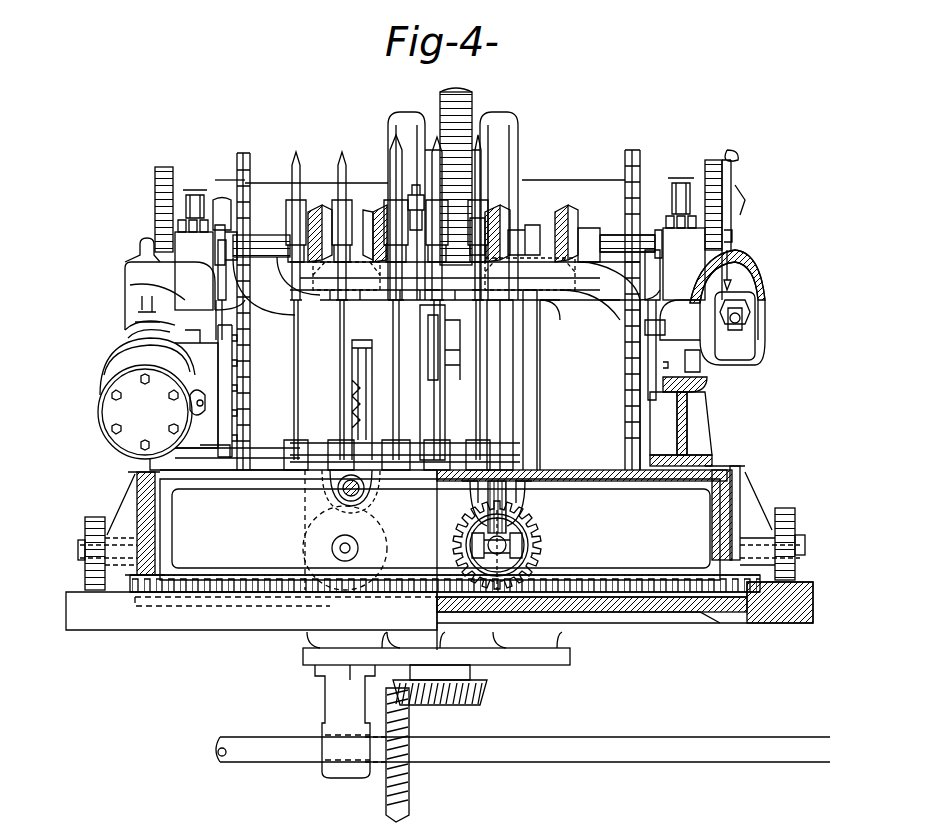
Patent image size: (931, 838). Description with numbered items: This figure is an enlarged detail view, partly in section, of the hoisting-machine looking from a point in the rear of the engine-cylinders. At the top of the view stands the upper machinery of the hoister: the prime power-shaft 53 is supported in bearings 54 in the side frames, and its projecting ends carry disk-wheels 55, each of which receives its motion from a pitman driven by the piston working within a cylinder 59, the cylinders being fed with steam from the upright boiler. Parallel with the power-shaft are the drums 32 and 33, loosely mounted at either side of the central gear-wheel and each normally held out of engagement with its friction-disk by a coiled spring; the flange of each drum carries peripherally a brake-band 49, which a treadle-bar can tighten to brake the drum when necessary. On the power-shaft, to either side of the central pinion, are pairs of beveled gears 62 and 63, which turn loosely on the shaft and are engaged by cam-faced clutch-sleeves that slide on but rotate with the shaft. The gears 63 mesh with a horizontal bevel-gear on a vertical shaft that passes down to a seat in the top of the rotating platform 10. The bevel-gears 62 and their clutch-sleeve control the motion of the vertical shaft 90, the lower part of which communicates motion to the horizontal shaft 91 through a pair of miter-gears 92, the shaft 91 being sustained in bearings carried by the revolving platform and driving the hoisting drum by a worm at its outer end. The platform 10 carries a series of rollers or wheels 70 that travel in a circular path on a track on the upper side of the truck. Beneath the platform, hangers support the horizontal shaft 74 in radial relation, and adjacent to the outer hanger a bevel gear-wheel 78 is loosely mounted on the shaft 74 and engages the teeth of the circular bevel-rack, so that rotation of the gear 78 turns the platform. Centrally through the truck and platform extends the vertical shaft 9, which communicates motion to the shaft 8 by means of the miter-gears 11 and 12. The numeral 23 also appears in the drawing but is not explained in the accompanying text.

The shaft 8 is at (488, 746).
The vertical shaft 9 is at (448, 672).
The rotating platform 10 is at (439, 523).
The miter-gear 11 is at (487, 690).
The miter-gear 12 is at (410, 810).
The ratchet bar 23 is at (455, 94).
The drum 32 is at (620, 225).
The drum 33 is at (251, 268).
The brake-band 49 is at (412, 118).
The prime power-shaft 53 is at (600, 291).
The bearing 54 is at (199, 238).
The disk-wheel 55 is at (165, 167).
The cylinder 59 is at (164, 390).
The beveled gear 62 is at (318, 208).
The beveled gear 63 is at (572, 210).
The rollers or wheels 70 is at (97, 517).
The horizontal shaft 74 is at (505, 540).
The bevel gear-wheel 78 is at (542, 546).
The vertical shaft 90 is at (350, 347).
The horizontal shaft 91 is at (330, 498).
The miter-gears 92 is at (326, 488).